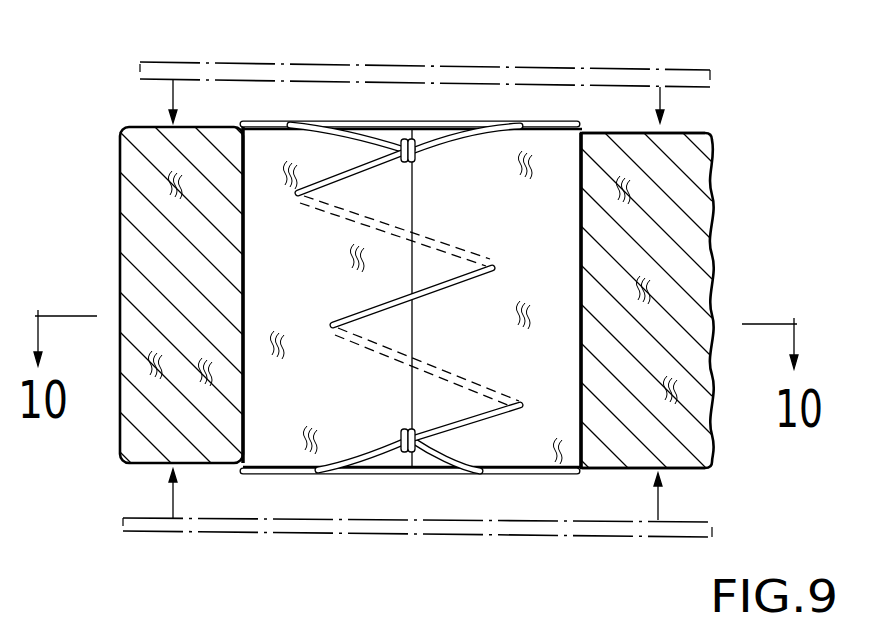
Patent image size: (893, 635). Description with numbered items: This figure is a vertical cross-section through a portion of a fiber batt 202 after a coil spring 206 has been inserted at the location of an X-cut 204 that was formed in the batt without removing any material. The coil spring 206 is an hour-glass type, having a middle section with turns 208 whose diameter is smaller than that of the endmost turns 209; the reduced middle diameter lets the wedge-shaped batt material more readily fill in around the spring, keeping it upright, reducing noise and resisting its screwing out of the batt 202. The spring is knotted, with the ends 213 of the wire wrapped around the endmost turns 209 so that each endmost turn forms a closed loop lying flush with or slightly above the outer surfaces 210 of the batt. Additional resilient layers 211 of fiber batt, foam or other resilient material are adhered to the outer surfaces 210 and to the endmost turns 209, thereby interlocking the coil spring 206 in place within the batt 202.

The batt 202 is at (706, 237).
The X-cut 204 is at (243, 233).
The coil spring 206 is at (344, 316).
The turns 208 is at (462, 303).
The endmost turns 209 is at (552, 125).
The outer surfaces 210 is at (697, 133).
The additional resilient layers 211 is at (630, 66).
The ends 213 is at (419, 159).